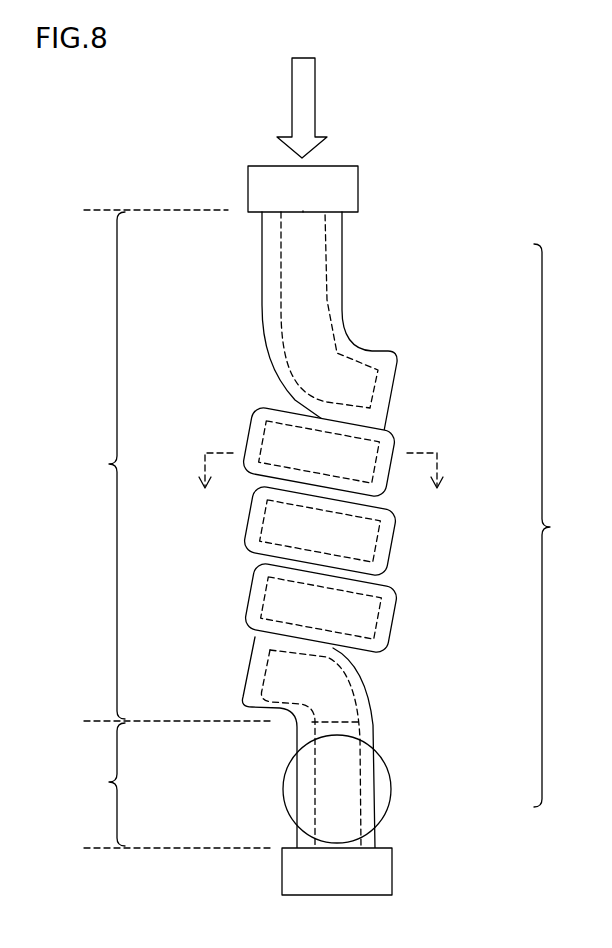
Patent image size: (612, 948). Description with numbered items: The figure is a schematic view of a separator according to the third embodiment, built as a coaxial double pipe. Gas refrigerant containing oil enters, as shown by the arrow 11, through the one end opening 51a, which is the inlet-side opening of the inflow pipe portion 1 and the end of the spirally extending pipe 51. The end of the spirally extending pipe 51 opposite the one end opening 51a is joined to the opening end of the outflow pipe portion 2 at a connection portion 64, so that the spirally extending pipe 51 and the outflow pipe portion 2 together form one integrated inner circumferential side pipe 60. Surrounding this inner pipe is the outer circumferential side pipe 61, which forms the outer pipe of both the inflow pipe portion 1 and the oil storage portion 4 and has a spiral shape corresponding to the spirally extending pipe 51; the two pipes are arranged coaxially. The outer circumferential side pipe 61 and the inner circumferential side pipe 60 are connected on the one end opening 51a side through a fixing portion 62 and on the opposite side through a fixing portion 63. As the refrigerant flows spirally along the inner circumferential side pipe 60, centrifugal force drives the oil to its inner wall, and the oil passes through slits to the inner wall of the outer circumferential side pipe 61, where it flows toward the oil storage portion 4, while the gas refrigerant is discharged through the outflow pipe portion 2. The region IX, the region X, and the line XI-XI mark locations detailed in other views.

The arrow 11 is at (315, 81).
The fixing portion 62 is at (263, 182).
The one end opening 51a is at (303, 210).
The spirally extending pipe 51 is at (327, 257).
The outer circumferential side pipe 61 is at (387, 450).
The connection portion 64 is at (337, 720).
The outflow pipe portion 2 is at (382, 742).
The fixing portion 63 is at (292, 870).
The inner circumferential side pipe 60 is at (557, 525).
The inflow pipe portion 1 is at (105, 465).
The oil storage portion 4 is at (104, 784).
The region X is at (391, 787).
The line XI- XI is at (321, 483).
The region IX is at (380, 547).